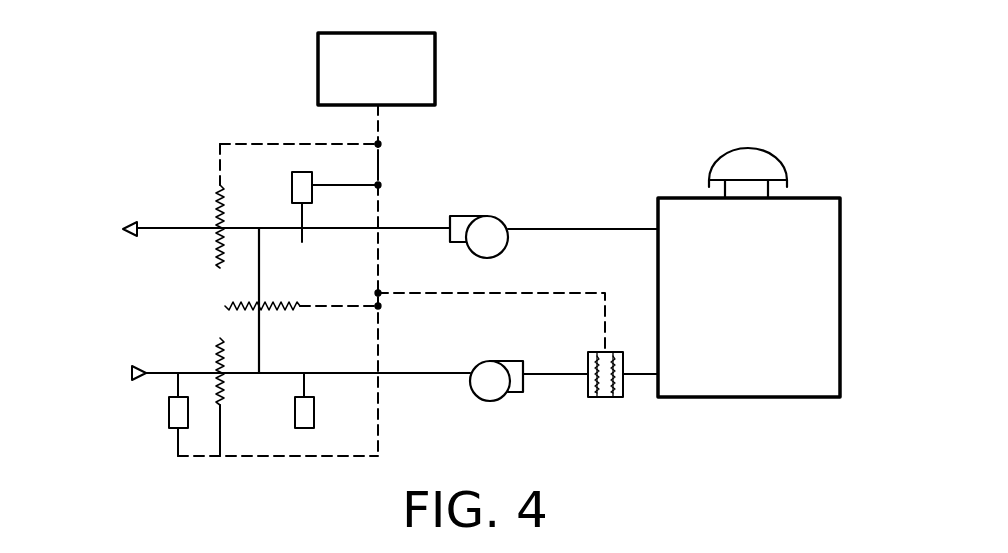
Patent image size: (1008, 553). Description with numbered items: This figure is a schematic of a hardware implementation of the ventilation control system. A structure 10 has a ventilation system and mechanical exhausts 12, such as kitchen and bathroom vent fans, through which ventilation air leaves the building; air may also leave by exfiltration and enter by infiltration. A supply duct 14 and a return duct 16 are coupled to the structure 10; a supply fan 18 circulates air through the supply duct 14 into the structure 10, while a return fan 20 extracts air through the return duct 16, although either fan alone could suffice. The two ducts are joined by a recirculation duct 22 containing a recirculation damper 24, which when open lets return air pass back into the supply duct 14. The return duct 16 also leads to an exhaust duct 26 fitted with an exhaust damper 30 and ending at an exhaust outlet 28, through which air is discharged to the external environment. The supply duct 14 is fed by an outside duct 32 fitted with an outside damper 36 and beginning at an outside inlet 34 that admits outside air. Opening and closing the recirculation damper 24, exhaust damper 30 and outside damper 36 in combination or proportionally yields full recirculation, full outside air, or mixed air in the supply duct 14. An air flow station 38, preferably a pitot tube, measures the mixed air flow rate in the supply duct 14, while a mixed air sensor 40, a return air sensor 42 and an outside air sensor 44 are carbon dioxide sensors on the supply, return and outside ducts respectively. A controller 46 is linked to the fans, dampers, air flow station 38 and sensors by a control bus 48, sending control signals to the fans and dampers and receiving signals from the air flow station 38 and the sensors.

The structure 10 is at (841, 287).
The mechanical exhausts 12 is at (775, 163).
The supply duct 14 is at (551, 388).
The return duct 16 is at (566, 218).
The supply fan 18 is at (490, 402).
The return fan 20 is at (470, 215).
The recirculation duct 22 is at (260, 280).
The recirculation damper 24 is at (295, 312).
The exhaust duct 26 is at (163, 226).
The exhaust outlet 28 is at (116, 229).
The exhaust damper 30 is at (216, 226).
The outside duct 32 is at (151, 371).
The outside inlet 34 is at (130, 373).
The outside damper 36 is at (222, 340).
The air flow station 38 is at (607, 398).
The mixed air sensor 40 is at (294, 418).
The return air sensor 42 is at (313, 174).
The outside air sensor 44 is at (168, 424).
The controller 46 is at (436, 62).
The control bus 48 is at (382, 161).